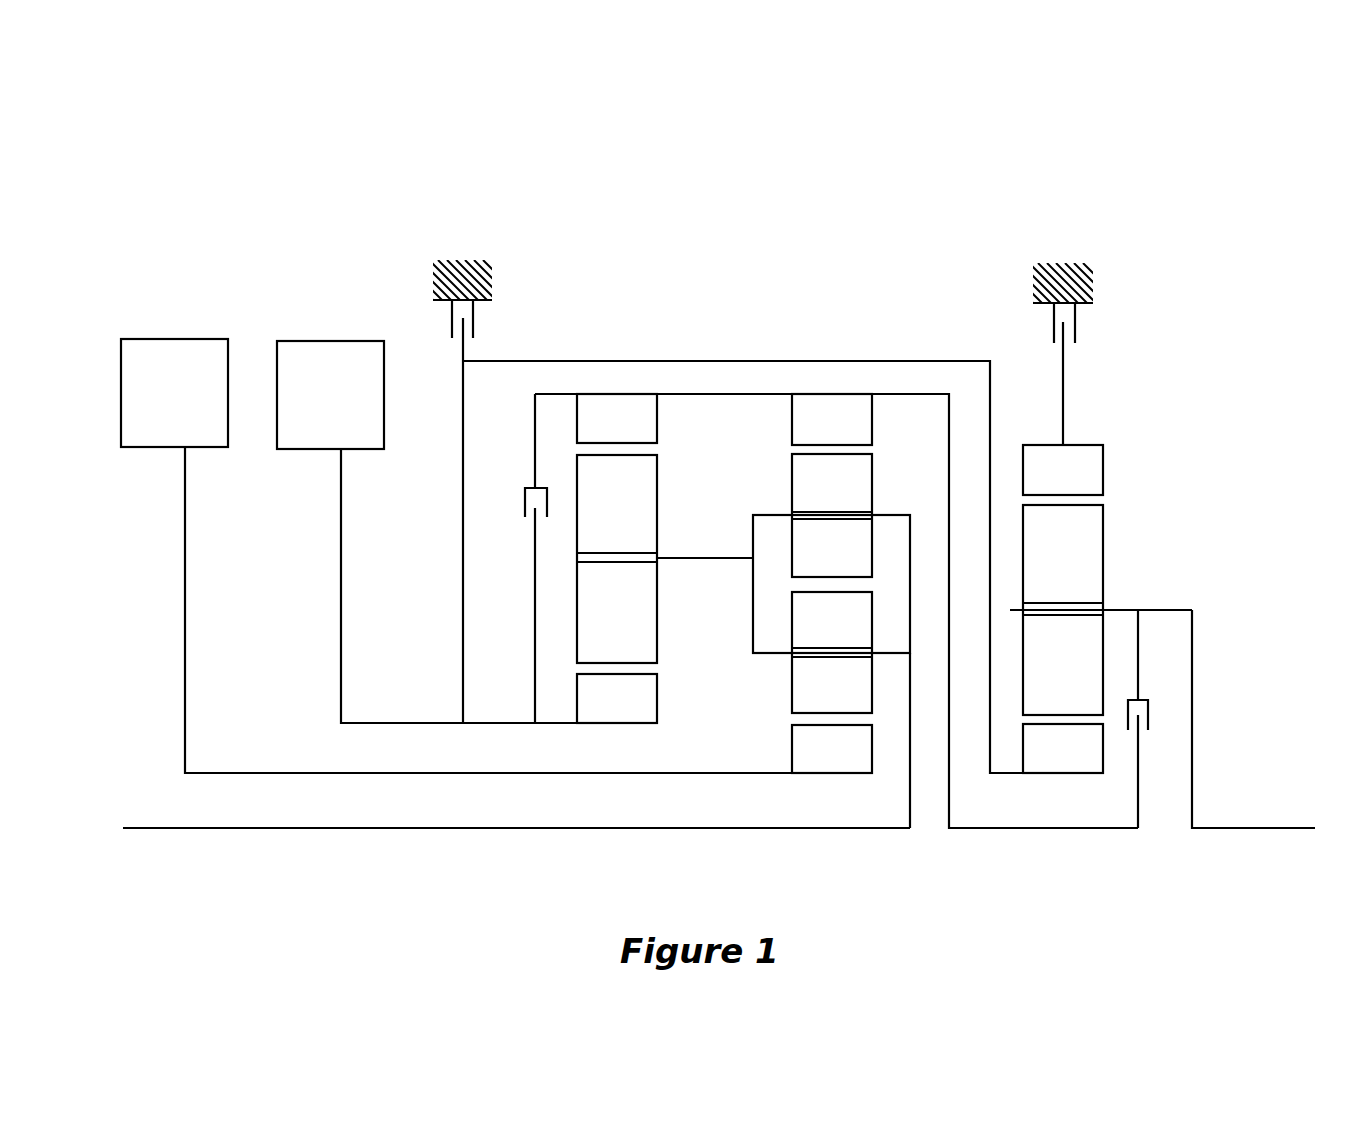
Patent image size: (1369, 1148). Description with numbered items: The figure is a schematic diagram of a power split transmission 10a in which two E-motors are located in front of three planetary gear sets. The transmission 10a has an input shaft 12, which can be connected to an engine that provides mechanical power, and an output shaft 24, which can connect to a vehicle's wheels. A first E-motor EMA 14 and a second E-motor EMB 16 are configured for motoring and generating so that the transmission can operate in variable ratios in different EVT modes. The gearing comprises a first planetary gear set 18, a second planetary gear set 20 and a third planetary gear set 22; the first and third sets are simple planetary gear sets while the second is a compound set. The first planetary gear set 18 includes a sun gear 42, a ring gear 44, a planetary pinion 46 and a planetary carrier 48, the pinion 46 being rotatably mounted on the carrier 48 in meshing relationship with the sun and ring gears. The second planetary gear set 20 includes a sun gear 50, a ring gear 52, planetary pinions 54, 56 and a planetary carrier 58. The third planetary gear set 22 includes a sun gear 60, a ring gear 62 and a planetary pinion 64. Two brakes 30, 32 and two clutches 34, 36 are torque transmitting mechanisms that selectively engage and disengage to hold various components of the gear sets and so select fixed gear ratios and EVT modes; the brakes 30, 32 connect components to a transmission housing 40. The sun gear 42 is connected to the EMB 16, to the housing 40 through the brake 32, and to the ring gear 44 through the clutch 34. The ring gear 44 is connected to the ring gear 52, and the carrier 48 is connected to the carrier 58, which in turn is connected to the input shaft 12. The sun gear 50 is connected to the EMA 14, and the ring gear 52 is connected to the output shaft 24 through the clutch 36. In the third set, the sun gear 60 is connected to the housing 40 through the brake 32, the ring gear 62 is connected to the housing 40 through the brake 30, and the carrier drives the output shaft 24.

The power split transmission 10a is at (760, 212).
The input shaft 12 is at (173, 828).
The first E-motor 14 is at (185, 338).
The second E-motor 16 is at (341, 340).
The first planetary gear set 18 is at (617, 333).
The second planetary gear set 20 is at (834, 338).
The third planetary gear set 22 is at (1175, 480).
The output shaft 24 is at (1267, 828).
The brake 30 is at (1097, 324).
The brake 32 is at (496, 324).
The clutch 34 is at (512, 506).
The clutch 36 is at (1157, 694).
The transmission housing 40 is at (463, 248).
The sun gear 42 is at (657, 697).
The ring gear 44 is at (657, 418).
The planetary pinion 46 is at (657, 600).
The planetary carrier 48 is at (685, 558).
The sun gear 50 is at (843, 773).
The ring gear 52 is at (792, 420).
The planetary pinion 54 is at (872, 488).
The planetary pinion 56 is at (792, 678).
The planetary carrier 58 is at (910, 578).
The sun gear 60 is at (1060, 773).
The ring gear 62 is at (1103, 470).
The planetary pinion 64 is at (1103, 570).